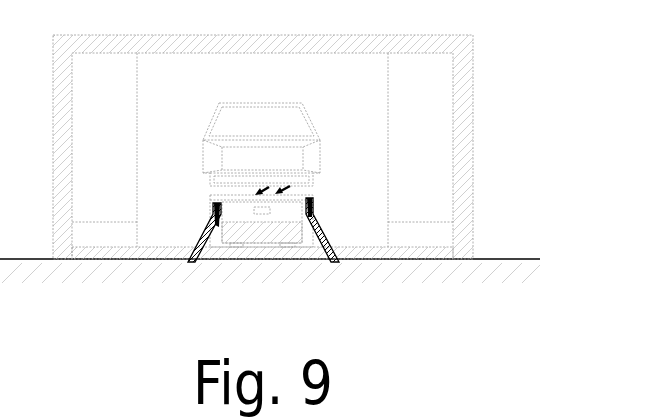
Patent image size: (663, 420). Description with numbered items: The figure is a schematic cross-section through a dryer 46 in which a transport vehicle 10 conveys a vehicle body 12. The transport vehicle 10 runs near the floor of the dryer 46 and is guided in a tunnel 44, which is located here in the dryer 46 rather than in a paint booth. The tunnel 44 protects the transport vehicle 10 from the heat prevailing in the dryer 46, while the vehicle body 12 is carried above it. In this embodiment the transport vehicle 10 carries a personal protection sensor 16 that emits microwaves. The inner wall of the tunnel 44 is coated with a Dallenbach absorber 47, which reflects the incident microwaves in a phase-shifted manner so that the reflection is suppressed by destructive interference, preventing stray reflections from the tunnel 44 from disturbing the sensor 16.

The dryer 46 is at (499, 139).
The vehicle 12 is at (203, 155).
The transport vehicle 10 is at (295, 205).
The personal protection sensor 16 is at (259, 210).
The Dallenbach absorber 47 is at (214, 207).
The tunnel 44 is at (201, 230).